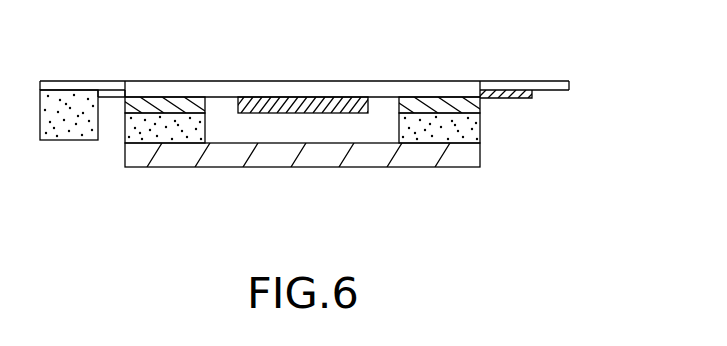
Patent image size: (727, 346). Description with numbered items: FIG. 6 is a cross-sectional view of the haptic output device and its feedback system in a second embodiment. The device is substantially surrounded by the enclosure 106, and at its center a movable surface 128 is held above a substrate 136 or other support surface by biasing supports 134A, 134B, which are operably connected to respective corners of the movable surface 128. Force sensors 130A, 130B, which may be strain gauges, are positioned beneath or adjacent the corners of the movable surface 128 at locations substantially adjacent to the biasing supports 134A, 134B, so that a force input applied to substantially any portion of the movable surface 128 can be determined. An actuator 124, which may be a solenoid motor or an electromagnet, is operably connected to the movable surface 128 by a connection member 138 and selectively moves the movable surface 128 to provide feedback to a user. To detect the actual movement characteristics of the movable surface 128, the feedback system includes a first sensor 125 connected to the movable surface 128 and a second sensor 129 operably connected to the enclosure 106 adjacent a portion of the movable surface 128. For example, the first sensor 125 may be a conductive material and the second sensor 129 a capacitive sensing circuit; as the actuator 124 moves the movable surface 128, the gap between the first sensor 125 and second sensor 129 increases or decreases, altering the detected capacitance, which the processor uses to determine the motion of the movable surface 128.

The enclosure 106 is at (65, 81).
The actuator 124 is at (60, 140).
The first sensor 125 is at (267, 98).
The movable surface 128 is at (420, 87).
The second sensor 129 is at (550, 98).
The force sensor 130A is at (162, 100).
The force sensor 130B is at (478, 107).
The biasing support 134A is at (157, 133).
The biasing support 134B is at (478, 128).
The substrate 136 is at (478, 157).
The connection member 138 is at (112, 98).